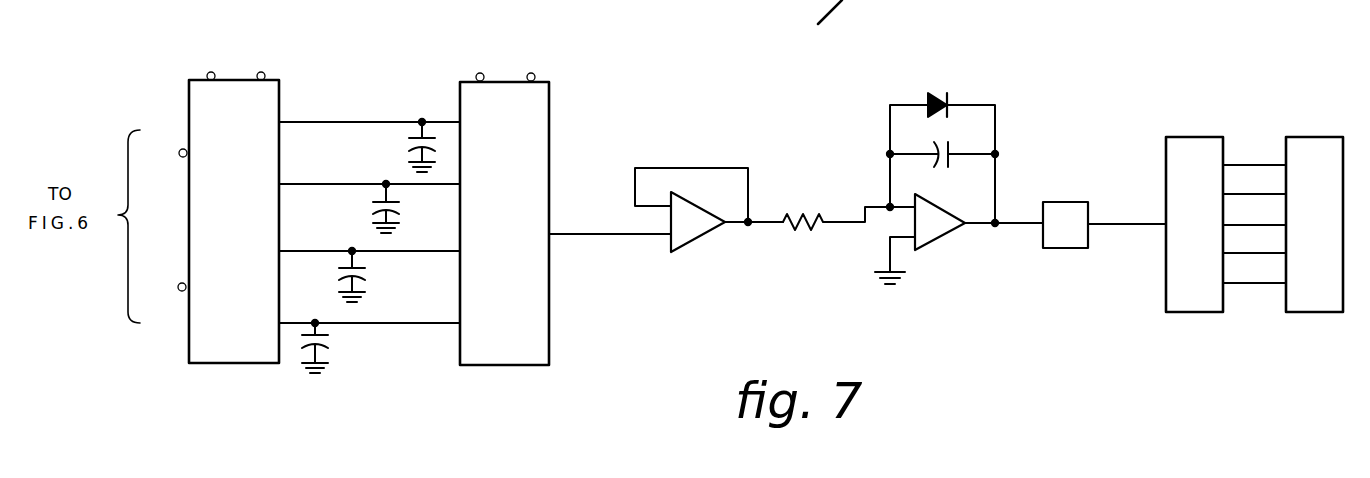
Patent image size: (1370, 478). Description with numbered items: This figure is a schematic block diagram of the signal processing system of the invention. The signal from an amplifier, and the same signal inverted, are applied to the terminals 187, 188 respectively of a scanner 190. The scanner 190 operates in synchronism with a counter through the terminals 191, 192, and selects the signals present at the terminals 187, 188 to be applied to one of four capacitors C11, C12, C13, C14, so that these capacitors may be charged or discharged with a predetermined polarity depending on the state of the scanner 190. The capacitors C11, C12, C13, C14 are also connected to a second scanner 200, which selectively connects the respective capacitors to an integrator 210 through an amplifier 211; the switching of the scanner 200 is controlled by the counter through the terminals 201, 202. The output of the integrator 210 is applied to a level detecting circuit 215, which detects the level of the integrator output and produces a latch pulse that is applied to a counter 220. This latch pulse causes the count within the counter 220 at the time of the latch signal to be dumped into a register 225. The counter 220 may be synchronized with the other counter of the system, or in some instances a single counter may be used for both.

The terminal 187 is at (179, 152).
The terminal 188 is at (179, 291).
The scanner 190 is at (248, 201).
The terminal 191 is at (211, 72).
The terminal 192 is at (262, 72).
The scanner 200 is at (518, 211).
The terminal 201 is at (479, 73).
The terminal 202 is at (534, 73).
The integrator 210 is at (947, 230).
The amplifier 211 is at (713, 230).
The level detecting circuit 215 is at (1085, 250).
The counter 220 is at (1210, 219).
The register 225 is at (1328, 219).
The capacitor C11 is at (399, 146).
The capacitor C12 is at (407, 207).
The capacitor C13 is at (375, 275).
The capacitor C14 is at (340, 347).